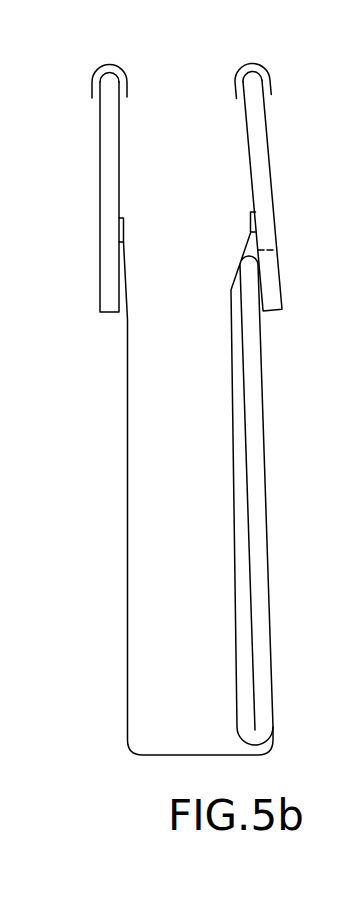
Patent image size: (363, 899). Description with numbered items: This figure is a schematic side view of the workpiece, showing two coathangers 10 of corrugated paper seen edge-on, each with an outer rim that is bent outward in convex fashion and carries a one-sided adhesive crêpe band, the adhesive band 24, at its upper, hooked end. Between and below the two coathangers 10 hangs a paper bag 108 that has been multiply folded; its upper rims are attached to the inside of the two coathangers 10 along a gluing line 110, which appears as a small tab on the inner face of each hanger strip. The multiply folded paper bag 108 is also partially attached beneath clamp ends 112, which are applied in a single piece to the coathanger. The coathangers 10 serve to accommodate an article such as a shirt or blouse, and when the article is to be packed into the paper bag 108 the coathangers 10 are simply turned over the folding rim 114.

The coathanger 10 is at (108, 133).
The adhesive band 24 is at (127, 70).
The paper bag 108 is at (127, 460).
The gluing line 110 is at (124, 228).
The clamp ends 112 is at (275, 292).
The folding rim 114 is at (118, 253).